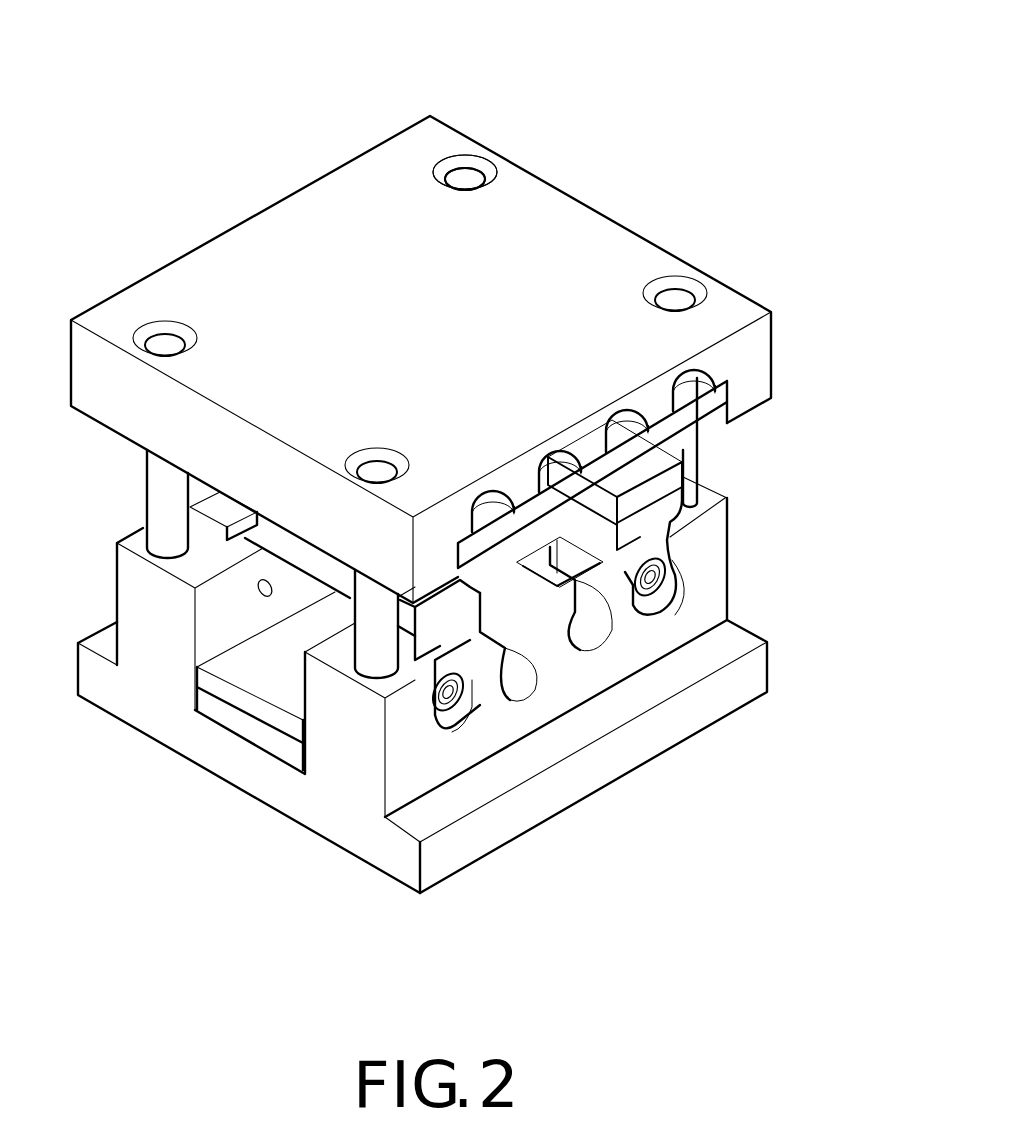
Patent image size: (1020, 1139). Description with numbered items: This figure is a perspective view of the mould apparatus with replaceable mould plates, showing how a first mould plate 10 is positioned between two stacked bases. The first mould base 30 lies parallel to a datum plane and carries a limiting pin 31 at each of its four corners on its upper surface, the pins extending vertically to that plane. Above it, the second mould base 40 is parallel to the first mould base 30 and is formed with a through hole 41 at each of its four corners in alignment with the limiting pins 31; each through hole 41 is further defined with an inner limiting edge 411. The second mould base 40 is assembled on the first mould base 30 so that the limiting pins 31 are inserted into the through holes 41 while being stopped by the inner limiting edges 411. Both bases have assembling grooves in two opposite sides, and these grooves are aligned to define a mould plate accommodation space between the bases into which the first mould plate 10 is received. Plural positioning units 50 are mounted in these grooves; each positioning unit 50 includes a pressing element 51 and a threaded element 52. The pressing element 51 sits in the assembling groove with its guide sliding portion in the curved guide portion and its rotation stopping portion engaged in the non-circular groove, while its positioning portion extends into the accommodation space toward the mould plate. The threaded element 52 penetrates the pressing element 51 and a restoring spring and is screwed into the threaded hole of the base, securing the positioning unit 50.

The first mould plate 10 is at (296, 571).
The first mould base 30 is at (252, 793).
The limiting pin 31 is at (467, 178).
The second mould base 40 is at (555, 186).
The through hole 41 is at (446, 165).
The inner limiting edge 411 is at (488, 176).
The positioning unit 50 is at (516, 680).
The pressing element 51 is at (457, 633).
The threaded element 52 is at (455, 700).